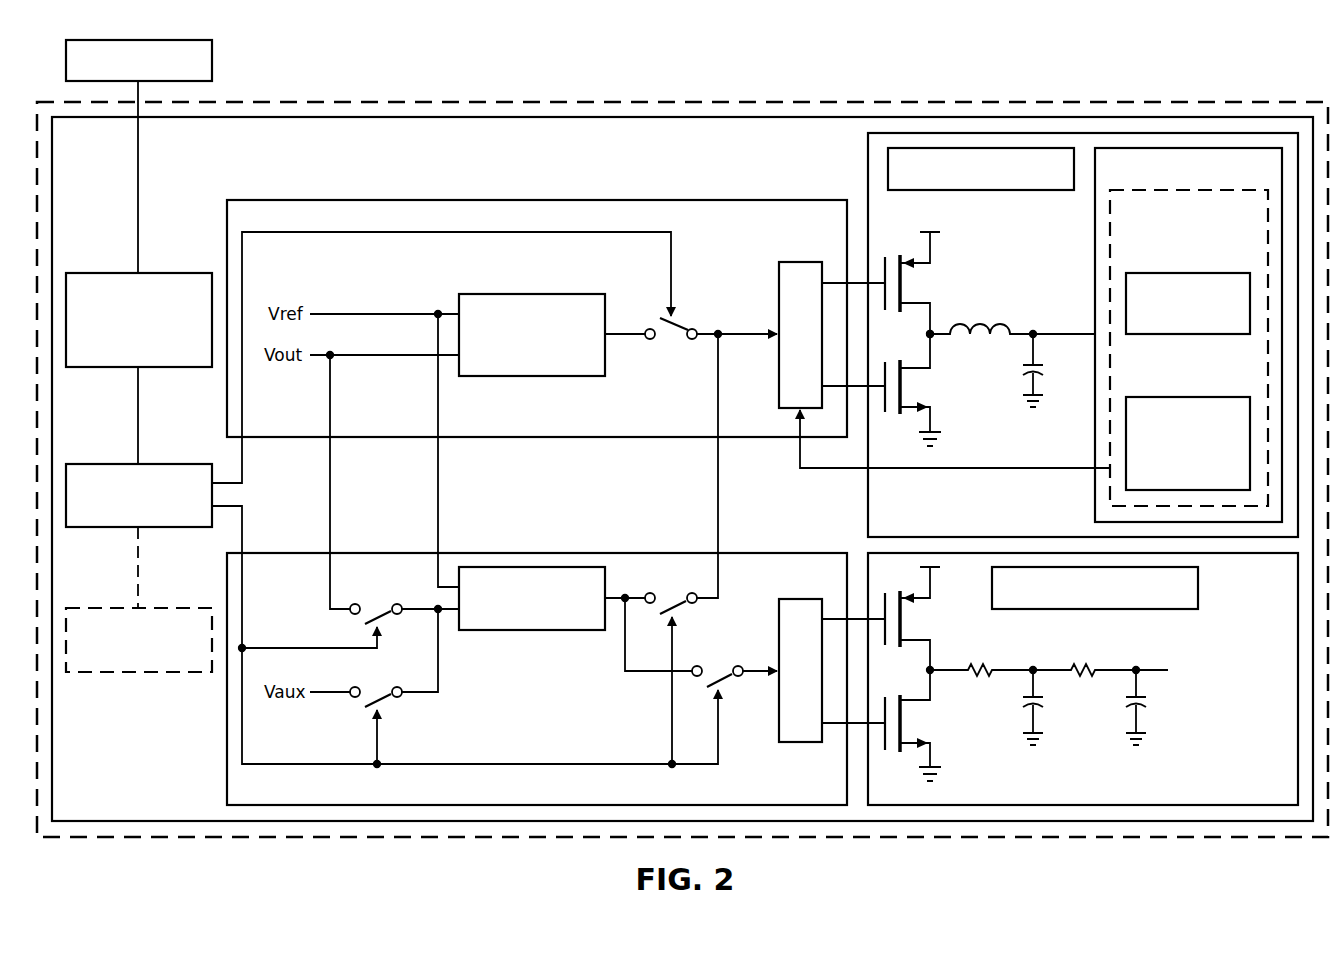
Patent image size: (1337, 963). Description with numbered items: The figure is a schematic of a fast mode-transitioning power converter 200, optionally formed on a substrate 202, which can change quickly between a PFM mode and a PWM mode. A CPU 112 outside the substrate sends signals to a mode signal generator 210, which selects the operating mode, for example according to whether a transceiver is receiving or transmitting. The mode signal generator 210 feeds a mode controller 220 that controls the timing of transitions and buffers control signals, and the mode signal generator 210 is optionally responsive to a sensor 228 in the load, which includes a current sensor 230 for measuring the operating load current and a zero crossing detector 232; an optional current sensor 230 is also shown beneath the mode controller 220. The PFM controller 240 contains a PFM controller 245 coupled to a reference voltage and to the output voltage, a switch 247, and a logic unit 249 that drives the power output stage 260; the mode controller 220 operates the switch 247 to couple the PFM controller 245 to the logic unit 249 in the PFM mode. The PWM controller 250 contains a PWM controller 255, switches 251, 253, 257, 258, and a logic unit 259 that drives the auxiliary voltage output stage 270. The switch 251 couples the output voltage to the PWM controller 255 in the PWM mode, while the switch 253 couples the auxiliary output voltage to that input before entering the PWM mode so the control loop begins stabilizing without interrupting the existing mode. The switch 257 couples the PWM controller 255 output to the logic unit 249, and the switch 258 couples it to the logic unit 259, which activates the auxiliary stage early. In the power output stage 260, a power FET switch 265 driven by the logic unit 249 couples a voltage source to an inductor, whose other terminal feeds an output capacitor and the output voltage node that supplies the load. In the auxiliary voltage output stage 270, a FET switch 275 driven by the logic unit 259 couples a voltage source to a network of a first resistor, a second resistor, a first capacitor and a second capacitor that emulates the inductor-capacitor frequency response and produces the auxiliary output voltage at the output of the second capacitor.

The CPU 112 is at (213, 63).
The fast mode-transitioning power converter 200 is at (112, 790).
The substrate 202 is at (684, 99).
The mode signal generator 210 is at (105, 273).
The mode controller 220 is at (105, 527).
The sensor 228 is at (1170, 256).
The current sensor 230 is at (105, 672).
The zero crossing detector 232 is at (1168, 397).
The PFM controller 240 is at (489, 198).
The PFM controller 245 is at (530, 294).
The switch 247 is at (691, 326).
The logic unit 249 is at (800, 262).
The PWM controller 250 is at (225, 713).
The switch 251 is at (396, 614).
The switch 253 is at (396, 697).
The PWM controller 255 is at (535, 630).
The switch 257 is at (691, 605).
The switch 258 is at (736, 680).
The logic unit 259 is at (800, 742).
The power output stage 260 is at (866, 170).
The power FET switch 265 is at (932, 341).
The auxiliary voltage output stage 270 is at (1065, 784).
The FET switch 275 is at (932, 677).